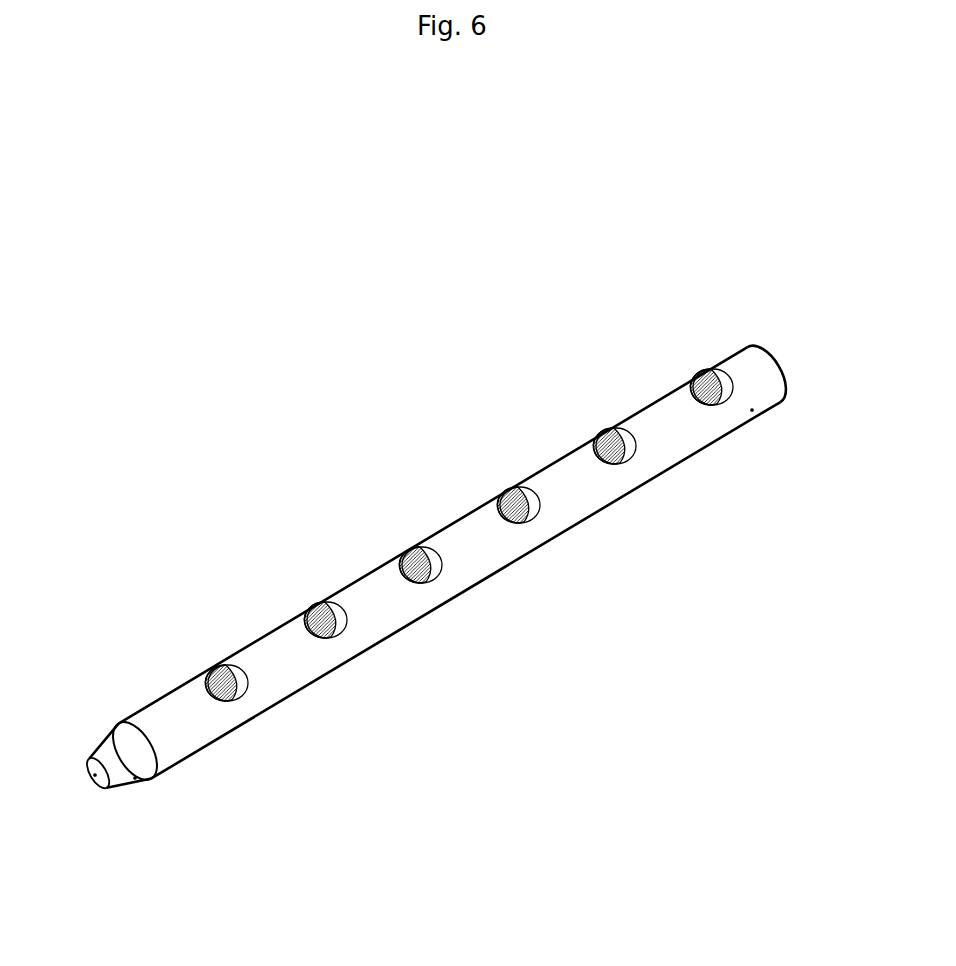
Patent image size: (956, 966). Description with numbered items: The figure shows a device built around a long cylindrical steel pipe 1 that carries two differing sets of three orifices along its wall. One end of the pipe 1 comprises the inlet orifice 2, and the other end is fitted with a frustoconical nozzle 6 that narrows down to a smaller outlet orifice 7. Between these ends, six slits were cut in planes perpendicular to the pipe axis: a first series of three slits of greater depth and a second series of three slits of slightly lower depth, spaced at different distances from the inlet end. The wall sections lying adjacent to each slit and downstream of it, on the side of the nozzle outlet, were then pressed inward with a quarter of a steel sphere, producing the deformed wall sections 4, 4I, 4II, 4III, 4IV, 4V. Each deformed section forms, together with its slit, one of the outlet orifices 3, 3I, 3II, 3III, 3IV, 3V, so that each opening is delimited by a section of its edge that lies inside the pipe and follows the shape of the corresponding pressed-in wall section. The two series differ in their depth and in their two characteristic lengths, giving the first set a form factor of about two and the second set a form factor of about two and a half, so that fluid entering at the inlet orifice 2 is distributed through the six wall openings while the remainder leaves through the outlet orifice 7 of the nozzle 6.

The cylindrical pipe 1 is at (752, 410).
The inlet orifice 2 is at (780, 357).
The outlet orifice 3 is at (706, 371).
The outlet orifice 3I is at (610, 430).
The outlet orifice 3II is at (514, 489).
The outlet orifice 3III is at (416, 548).
The outlet orifice 3IV is at (320, 606).
The outlet orifice 3V is at (221, 667).
The deformed wall section 4 is at (707, 403).
The deformed wall section 4I is at (610, 462).
The deformed wall section 4II is at (514, 521).
The deformed wall section 4III is at (414, 582).
The deformed wall section 4IV is at (318, 638).
The deformed wall section 4V is at (220, 701).
The nozzle 6 is at (135, 781).
The outlet orifice 7 is at (94, 776).